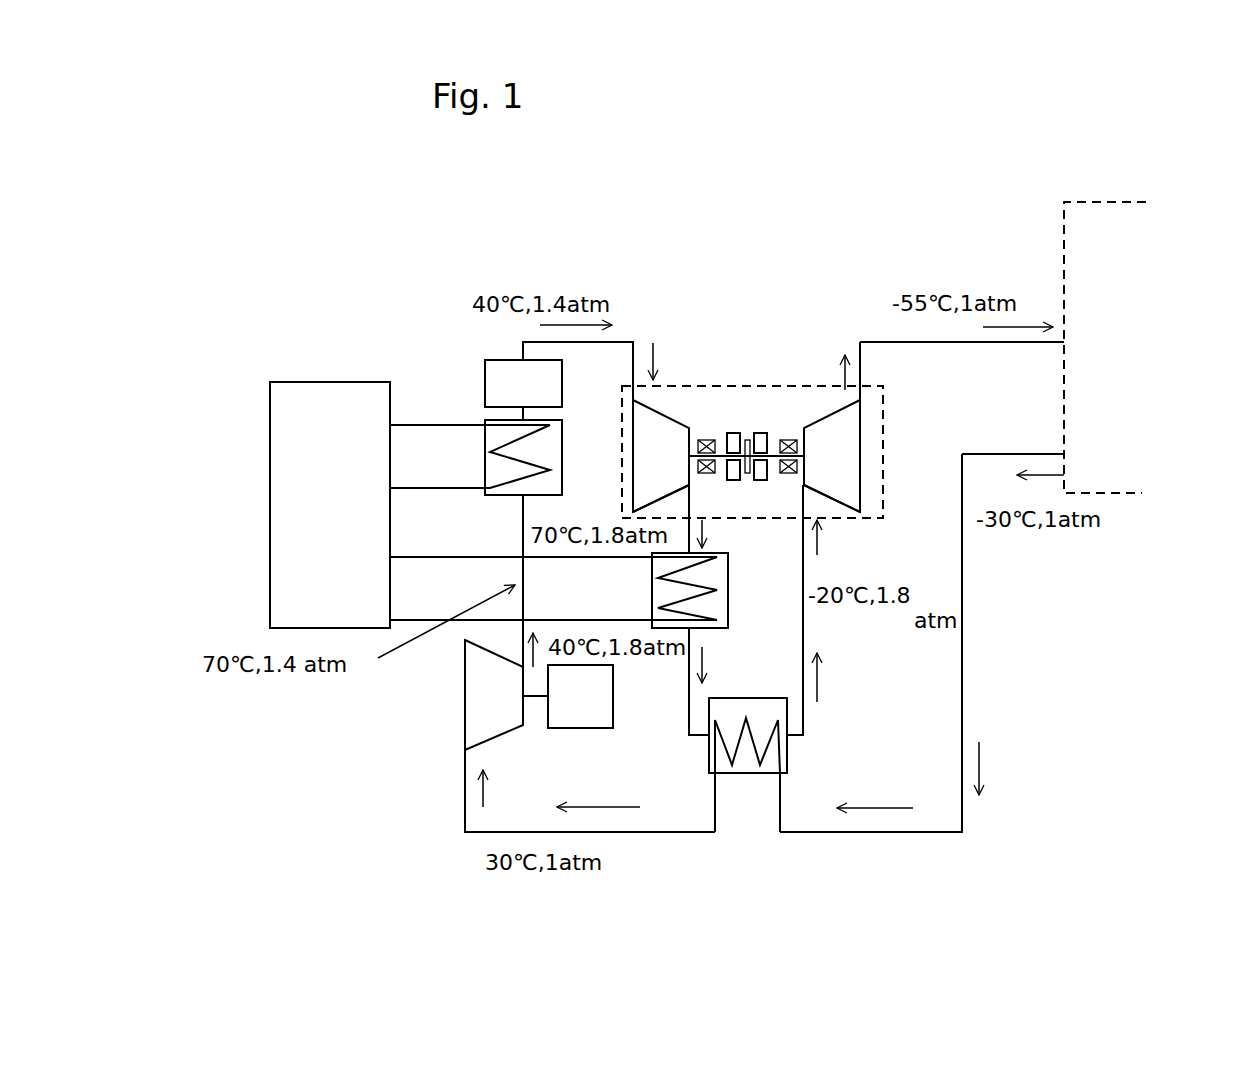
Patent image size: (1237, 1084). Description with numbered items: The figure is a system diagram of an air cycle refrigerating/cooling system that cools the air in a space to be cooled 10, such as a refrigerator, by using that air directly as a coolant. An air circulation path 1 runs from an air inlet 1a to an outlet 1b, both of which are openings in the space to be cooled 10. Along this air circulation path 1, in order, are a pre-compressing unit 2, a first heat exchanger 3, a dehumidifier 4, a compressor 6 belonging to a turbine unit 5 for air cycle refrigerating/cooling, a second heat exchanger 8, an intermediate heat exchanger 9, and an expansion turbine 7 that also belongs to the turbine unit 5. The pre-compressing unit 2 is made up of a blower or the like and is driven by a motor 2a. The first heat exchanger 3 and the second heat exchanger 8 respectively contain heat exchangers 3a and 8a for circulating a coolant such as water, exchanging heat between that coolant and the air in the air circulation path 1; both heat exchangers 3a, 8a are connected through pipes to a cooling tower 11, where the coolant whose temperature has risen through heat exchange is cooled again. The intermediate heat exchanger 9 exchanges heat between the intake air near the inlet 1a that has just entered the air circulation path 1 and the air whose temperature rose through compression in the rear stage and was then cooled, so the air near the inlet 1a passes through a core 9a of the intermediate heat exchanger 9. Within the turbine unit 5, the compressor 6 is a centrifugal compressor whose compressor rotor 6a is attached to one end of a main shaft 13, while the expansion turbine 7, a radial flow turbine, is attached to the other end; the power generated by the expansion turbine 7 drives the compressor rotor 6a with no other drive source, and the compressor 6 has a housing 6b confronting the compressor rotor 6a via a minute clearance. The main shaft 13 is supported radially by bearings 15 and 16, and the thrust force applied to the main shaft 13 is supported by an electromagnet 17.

The air circulation path 1 is at (927, 838).
The air inlet 1a is at (1064, 454).
The outlet 1b is at (1064, 344).
The pre-compressing unit 2 is at (480, 724).
The motor 2a is at (548, 730).
The first heat exchanger 3 is at (488, 418).
The heat exchanger 3a is at (503, 420).
The dehumidifier 4 is at (520, 385).
The turbine unit 5 is at (738, 385).
The compressor 6 is at (660, 420).
The compressor rotor 6a is at (645, 488).
The housing 6b is at (847, 488).
The expansion turbine 7 is at (832, 423).
The second heat exchanger 8 is at (717, 605).
The heat exchanger 8a is at (715, 567).
The intermediate heat exchanger 9 is at (748, 775).
The core 9a is at (772, 740).
The space to be cooled 10 is at (1130, 202).
The cooling tower 11 is at (300, 478).
The main shaft 13 is at (772, 465).
The bearing 15 is at (699, 440).
The bearing 16 is at (790, 440).
The electromagnet 17 is at (760, 433).